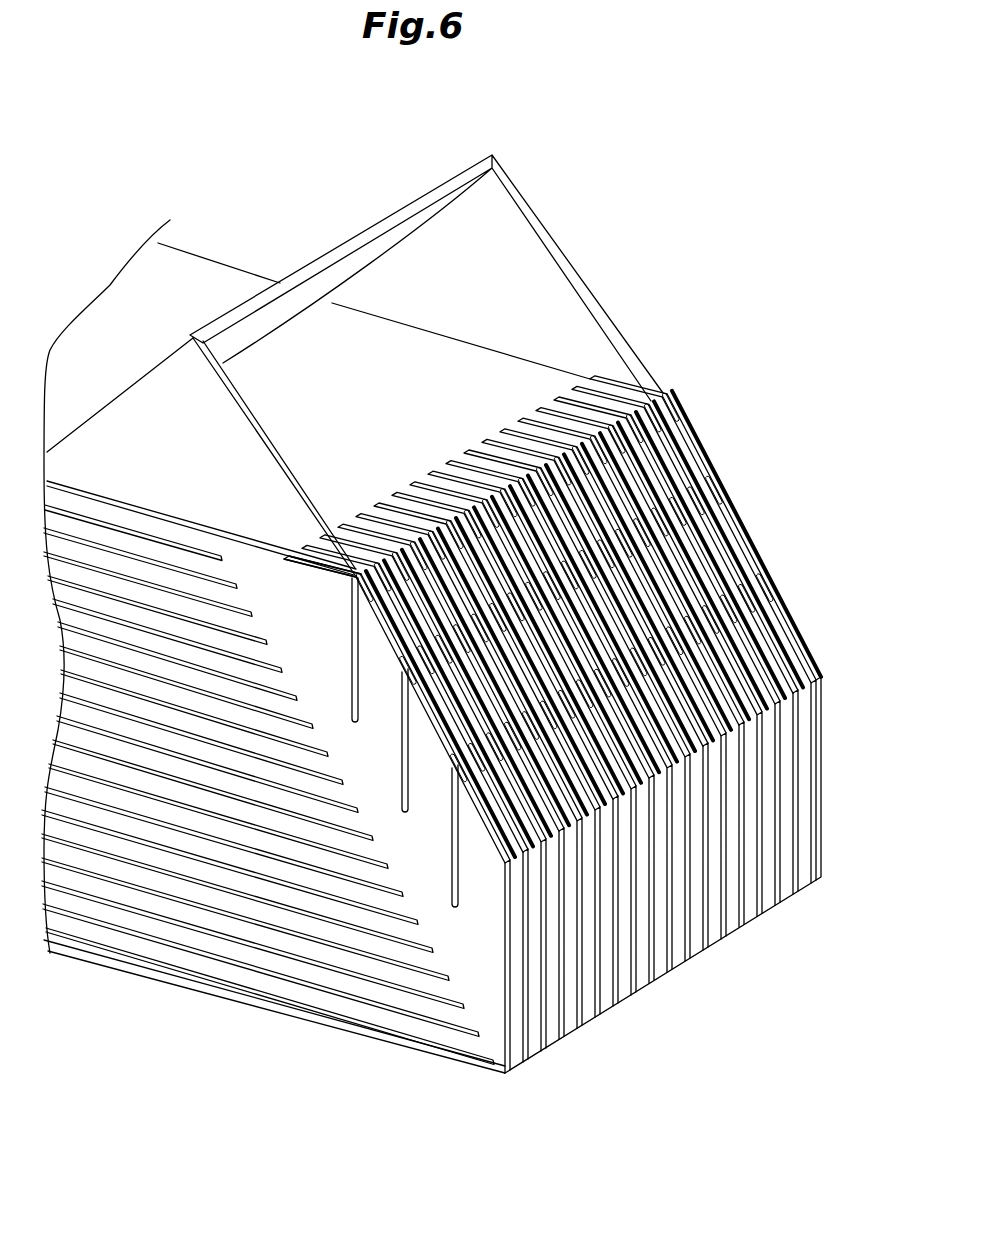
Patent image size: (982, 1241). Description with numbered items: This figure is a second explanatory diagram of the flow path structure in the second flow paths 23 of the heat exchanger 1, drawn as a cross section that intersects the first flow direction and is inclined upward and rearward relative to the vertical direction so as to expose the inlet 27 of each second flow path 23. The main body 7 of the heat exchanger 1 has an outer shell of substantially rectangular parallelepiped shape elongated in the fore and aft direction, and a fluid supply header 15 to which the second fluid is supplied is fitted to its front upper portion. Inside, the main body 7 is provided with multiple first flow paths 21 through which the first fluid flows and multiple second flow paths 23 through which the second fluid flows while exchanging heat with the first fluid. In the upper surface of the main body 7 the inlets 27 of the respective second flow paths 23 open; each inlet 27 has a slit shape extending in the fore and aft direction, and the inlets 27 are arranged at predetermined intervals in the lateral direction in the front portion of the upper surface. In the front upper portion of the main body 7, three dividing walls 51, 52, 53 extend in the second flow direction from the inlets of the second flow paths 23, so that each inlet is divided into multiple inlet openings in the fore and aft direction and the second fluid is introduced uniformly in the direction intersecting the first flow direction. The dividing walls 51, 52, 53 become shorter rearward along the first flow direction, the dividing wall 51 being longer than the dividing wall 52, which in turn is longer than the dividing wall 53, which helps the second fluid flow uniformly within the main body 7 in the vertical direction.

The heat exchanger 1 is at (588, 138).
The main body 7 is at (250, 255).
The fluid supply header 15 is at (568, 268).
The first flow paths 21 is at (747, 643).
The second flow paths 23 is at (473, 432).
The inlets 27 is at (418, 487).
The dividing wall 51 is at (718, 587).
The dividing wall 52 is at (668, 513).
The dividing wall 53 is at (663, 412).